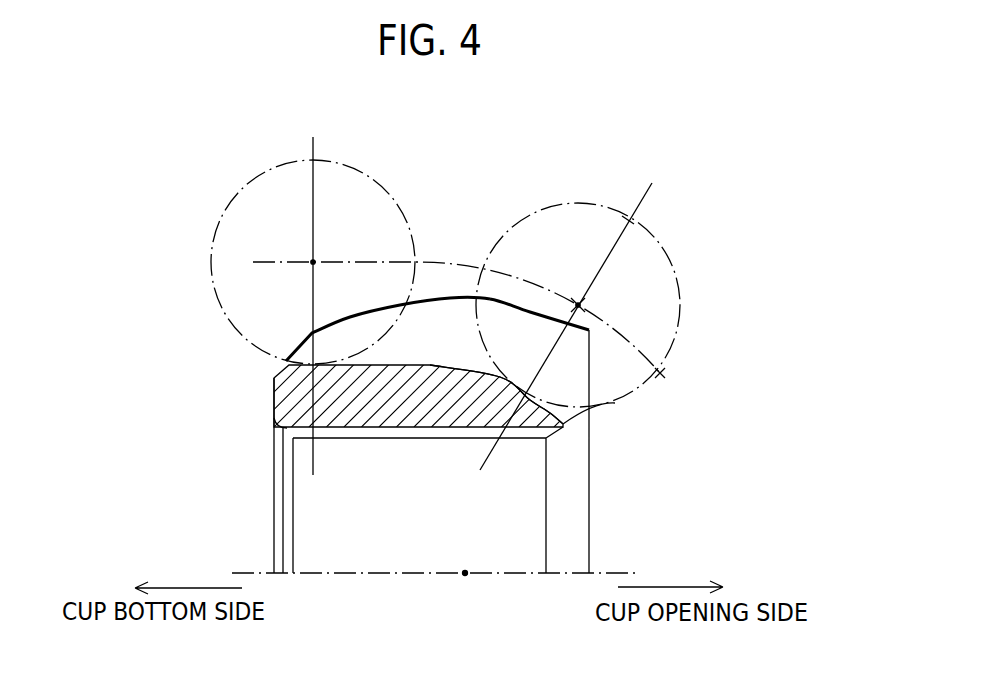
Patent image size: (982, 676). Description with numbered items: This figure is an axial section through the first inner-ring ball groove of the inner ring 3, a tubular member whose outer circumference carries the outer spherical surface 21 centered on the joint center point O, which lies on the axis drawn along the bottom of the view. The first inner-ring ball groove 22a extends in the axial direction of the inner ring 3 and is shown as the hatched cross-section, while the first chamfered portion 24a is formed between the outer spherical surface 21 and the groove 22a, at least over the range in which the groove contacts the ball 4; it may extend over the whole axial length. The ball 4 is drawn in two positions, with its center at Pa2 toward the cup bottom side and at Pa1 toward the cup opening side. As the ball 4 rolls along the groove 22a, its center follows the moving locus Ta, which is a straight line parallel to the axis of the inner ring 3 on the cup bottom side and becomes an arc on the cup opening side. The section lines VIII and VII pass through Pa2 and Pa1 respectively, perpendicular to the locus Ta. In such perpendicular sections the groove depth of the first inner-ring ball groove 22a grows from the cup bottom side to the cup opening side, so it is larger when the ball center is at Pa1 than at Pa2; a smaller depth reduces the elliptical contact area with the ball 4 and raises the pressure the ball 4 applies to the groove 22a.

The inner ring 3 is at (257, 450).
The outer spherical surface 21 is at (467, 297).
The first chamfered portion 24a is at (510, 297).
The first inner-ring ball groove 22a is at (570, 383).
The ball 4 is at (680, 339).
The ball center position on cup opening side Pa1 is at (668, 263).
The ball center position on cup bottom side Pa2 is at (245, 193).
The moving locus of the center of the ball Ta is at (424, 262).
The section line VII is at (574, 313).
The section line VIII is at (312, 292).
The joint center point O is at (436, 590).